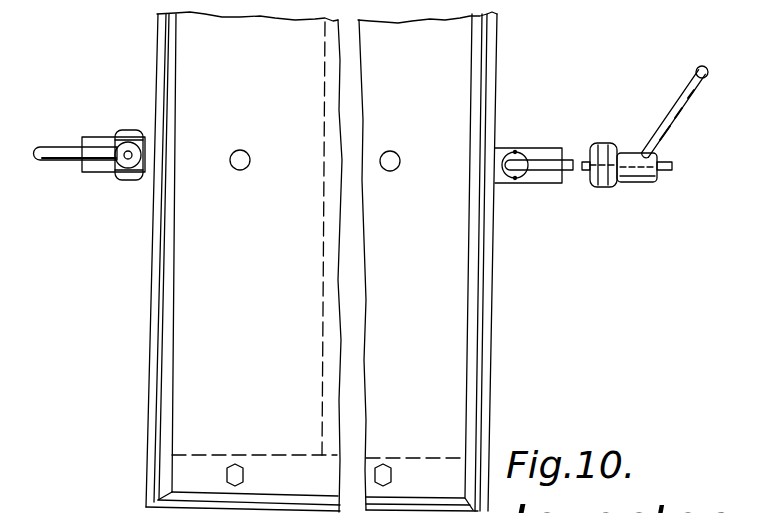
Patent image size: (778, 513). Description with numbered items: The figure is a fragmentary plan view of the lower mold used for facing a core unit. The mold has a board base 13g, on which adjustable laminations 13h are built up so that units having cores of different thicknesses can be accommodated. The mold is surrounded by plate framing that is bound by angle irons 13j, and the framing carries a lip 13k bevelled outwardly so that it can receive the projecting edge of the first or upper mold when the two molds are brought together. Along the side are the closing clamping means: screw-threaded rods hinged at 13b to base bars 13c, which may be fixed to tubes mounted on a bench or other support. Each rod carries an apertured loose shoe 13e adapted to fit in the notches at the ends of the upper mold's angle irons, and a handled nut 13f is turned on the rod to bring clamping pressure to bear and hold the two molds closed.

The hinge 13b is at (516, 151).
The base bar 13c is at (547, 175).
The loose shoe 13e is at (127, 180).
The handled nut 13f is at (115, 148).
The board base 13g is at (322, 353).
The adjustable laminations 13h is at (247, 104).
The angle irons 13j is at (486, 265).
The lip 13k is at (478, 353).